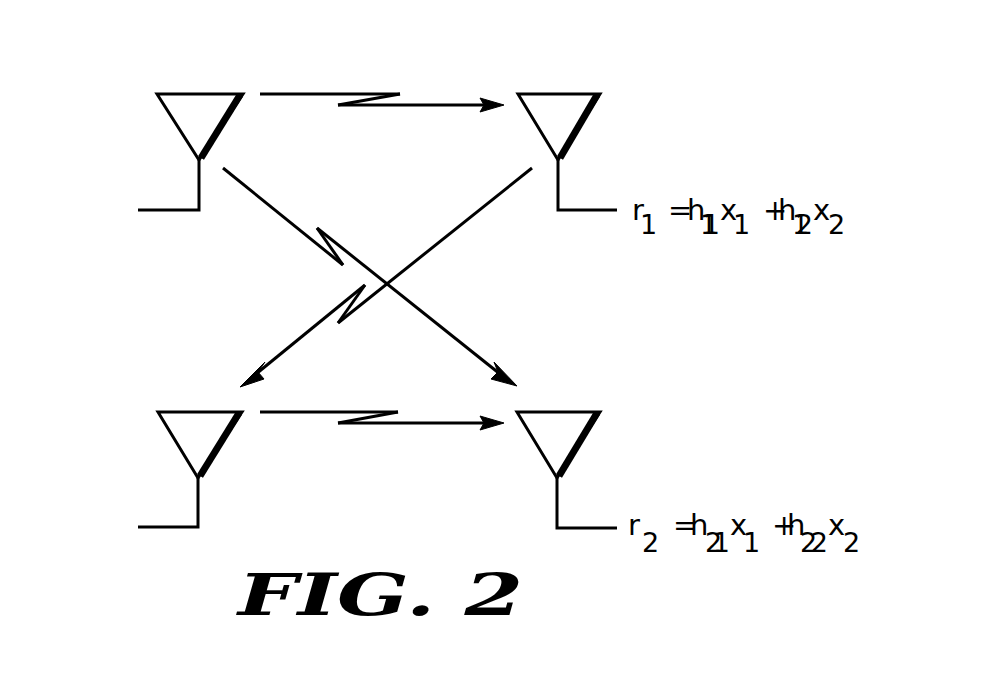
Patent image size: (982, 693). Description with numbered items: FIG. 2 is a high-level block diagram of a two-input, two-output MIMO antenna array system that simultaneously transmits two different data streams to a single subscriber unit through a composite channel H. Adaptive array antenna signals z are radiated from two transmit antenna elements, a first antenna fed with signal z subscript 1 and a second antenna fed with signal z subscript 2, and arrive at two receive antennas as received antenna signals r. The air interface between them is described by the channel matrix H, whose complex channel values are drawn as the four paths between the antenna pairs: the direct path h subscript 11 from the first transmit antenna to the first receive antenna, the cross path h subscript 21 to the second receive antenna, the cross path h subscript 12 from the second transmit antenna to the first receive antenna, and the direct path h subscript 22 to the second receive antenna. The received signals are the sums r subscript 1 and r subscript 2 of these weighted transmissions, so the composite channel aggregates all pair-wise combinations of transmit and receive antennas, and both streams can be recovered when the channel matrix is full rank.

The first transmit antenna (input signal z1) 1 is at (175, 168).
The second transmit antenna (input signal z2) 2 is at (174, 487).
The channel coefficient h11 path from transmit antenna 1 to receive antenna 1 11 is at (382, 79).
The channel coefficient h12 path from transmit antenna 2 to receive antenna 1 12 is at (386, 282).
The channel coefficient h21 path from transmit antenna 1 to receive antenna 2 21 is at (370, 277).
The channel coefficient h22 path from transmit antenna 2 to receive antenna 2 22 is at (382, 446).